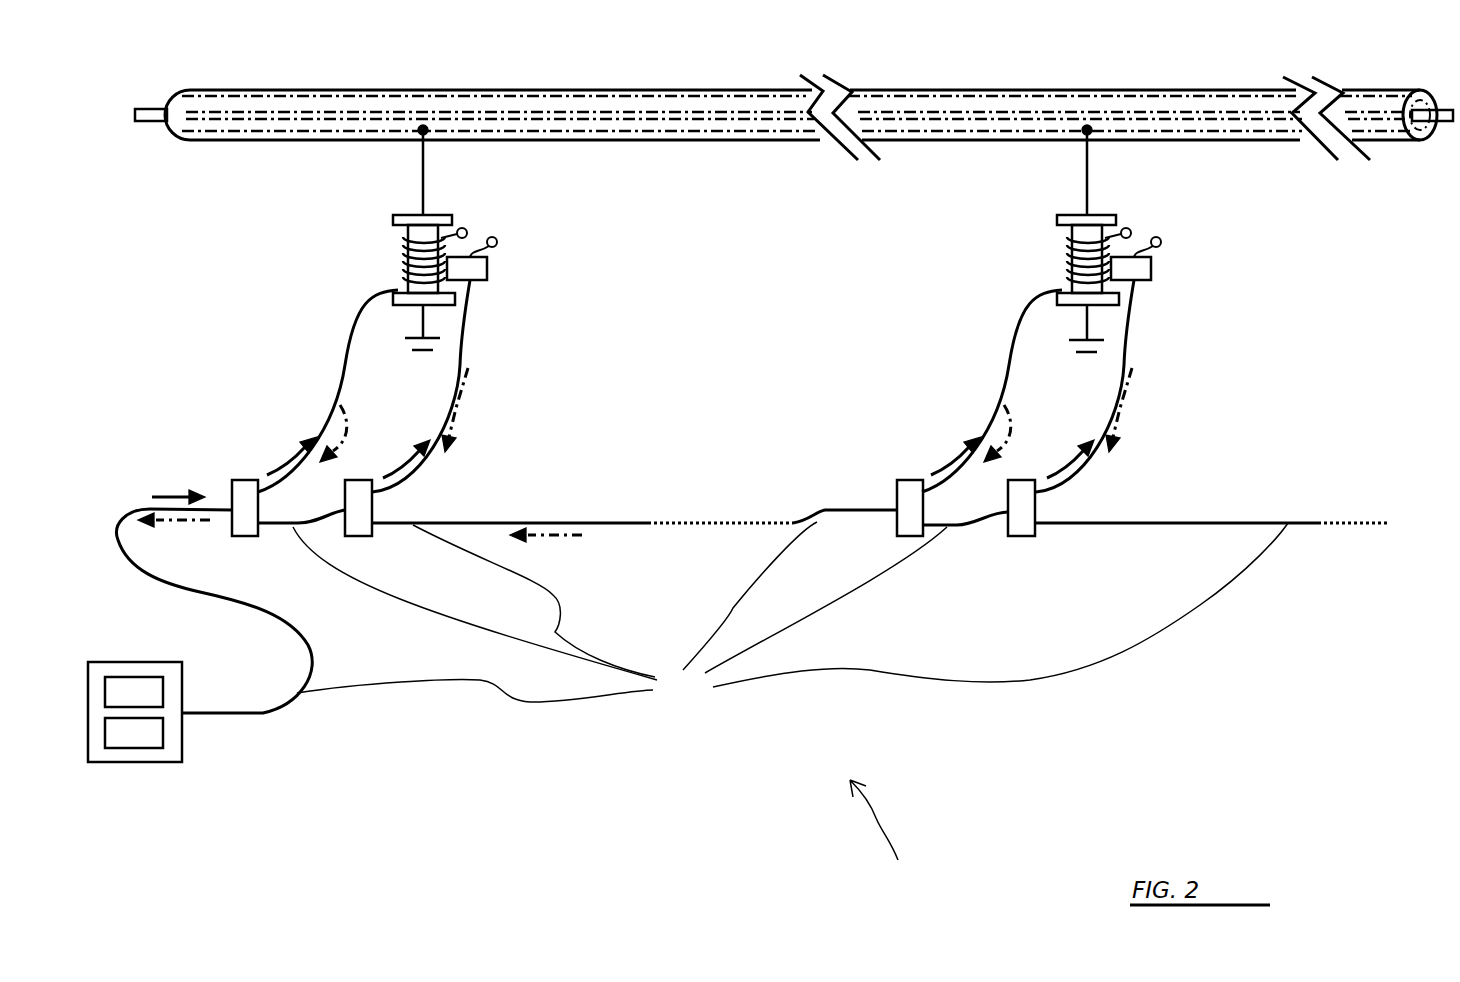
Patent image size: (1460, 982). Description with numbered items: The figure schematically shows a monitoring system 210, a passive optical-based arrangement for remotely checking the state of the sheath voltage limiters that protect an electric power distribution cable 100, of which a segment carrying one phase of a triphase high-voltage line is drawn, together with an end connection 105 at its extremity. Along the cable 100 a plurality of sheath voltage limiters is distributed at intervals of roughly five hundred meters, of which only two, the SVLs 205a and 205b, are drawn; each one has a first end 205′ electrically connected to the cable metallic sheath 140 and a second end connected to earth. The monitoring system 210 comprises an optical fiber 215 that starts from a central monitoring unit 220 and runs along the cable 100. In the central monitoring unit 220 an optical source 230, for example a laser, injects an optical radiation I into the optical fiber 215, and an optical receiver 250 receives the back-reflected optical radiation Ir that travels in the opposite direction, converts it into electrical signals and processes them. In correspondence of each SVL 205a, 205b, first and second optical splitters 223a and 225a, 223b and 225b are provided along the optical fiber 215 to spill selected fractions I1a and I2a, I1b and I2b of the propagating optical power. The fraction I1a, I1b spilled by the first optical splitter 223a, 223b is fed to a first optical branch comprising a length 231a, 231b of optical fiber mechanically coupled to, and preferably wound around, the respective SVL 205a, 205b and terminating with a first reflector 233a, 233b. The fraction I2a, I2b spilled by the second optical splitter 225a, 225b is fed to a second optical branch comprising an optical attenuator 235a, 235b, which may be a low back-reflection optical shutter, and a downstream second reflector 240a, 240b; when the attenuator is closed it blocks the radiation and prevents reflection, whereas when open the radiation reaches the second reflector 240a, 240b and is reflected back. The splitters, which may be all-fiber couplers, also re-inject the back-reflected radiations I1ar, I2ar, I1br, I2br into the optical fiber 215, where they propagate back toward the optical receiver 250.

The cable 100 is at (655, 84).
The line end connection 105 is at (146, 104).
The cable metallic sheath 140 is at (318, 100).
The SVL 205a is at (427, 232).
The SVL 205b is at (1117, 254).
The first end 205′ is at (393, 222).
The length of optical fiber 231a is at (403, 258).
The length of optical fiber 231b is at (1036, 260).
The first reflector 233a is at (466, 229).
The first reflector 233b is at (1177, 205).
The second reflector 240a is at (506, 241).
The second reflector 240b is at (1203, 237).
The optical attenuator 235a is at (490, 269).
The optical attenuator 235b is at (1185, 265).
The first optical splitter 223a is at (241, 480).
The first optical splitter 223b is at (884, 466).
The second optical splitter 225a is at (360, 537).
The second optical splitter 225b is at (1043, 553).
The optical power of injected optical radiation I is at (160, 495).
The back-reflected optical radiation Ir is at (165, 522).
The fraction of optical power I1a is at (290, 458).
The back-reflected optical radiation I1ar is at (345, 430).
The fraction of optical power I2a is at (400, 466).
The back-reflected optical radiation I2ar is at (462, 402).
The fraction of optical power I1b is at (949, 423).
The back-reflected optical radiation I1br is at (980, 453).
The fraction of optical power I2b is at (1061, 431).
The back-reflected optical radiation I2br is at (1151, 410).
The optical fiber 215 is at (790, 612).
The central monitoring unit 220 is at (170, 762).
The optical source 230 is at (135, 685).
The optical receiver 250 is at (152, 735).
The monitoring system 210 is at (891, 838).